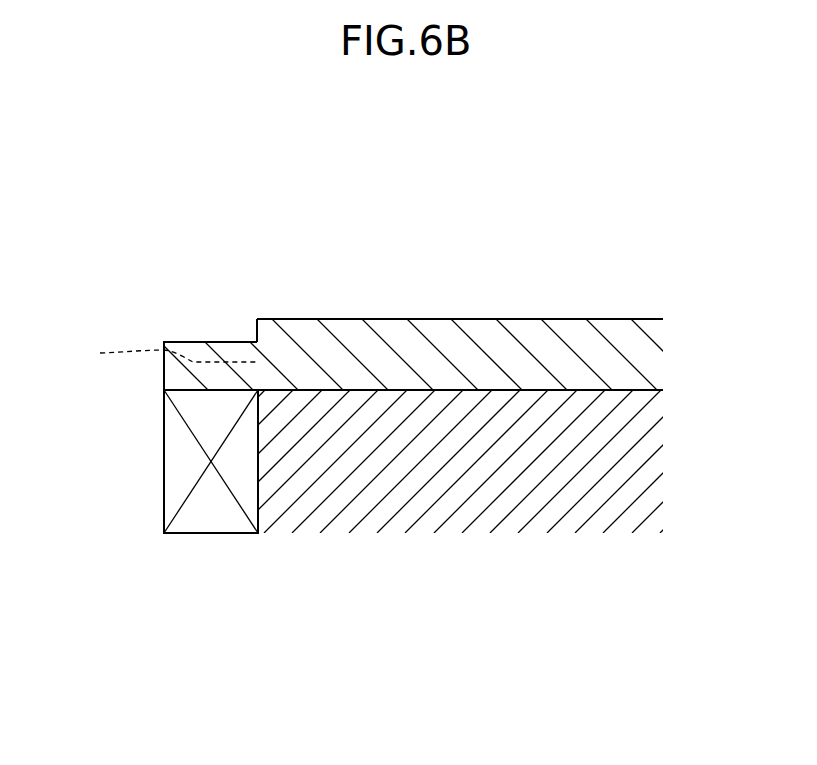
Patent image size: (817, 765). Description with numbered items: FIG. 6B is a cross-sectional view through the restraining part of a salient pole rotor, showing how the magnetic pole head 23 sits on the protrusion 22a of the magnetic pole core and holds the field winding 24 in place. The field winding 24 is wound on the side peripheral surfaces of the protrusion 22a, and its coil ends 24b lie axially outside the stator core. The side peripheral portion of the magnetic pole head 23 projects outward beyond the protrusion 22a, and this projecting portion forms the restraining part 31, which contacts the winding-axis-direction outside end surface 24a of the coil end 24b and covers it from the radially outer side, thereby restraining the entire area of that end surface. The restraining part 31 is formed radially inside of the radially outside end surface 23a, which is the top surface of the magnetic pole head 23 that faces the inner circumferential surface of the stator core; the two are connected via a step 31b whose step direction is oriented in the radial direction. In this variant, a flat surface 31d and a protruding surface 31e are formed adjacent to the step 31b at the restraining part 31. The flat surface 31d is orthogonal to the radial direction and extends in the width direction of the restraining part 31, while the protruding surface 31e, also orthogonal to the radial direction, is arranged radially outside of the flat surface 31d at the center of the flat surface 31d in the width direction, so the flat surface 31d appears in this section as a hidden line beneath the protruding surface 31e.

The magnetic pole head 23 is at (668, 355).
The radially outside end surface 23a is at (618, 319).
The restraining part 31 is at (163, 340).
The protruding surface 31e is at (200, 341).
The step 31b is at (256, 319).
The flat surface 31d is at (156, 355).
The winding-axis-direction outside end surface 24a is at (175, 390).
The field winding 24 is at (160, 506).
The coil end 24b is at (163, 455).
The protrusion 22a is at (654, 461).